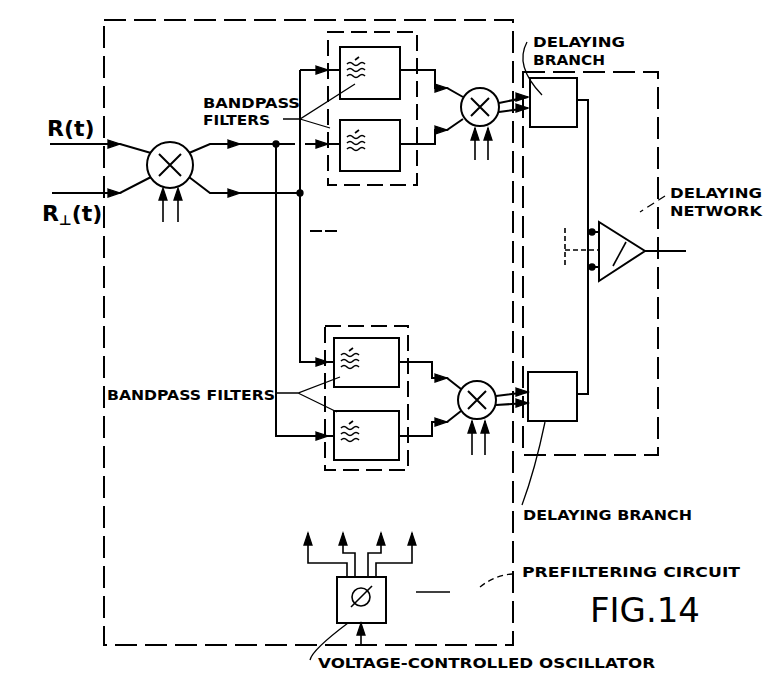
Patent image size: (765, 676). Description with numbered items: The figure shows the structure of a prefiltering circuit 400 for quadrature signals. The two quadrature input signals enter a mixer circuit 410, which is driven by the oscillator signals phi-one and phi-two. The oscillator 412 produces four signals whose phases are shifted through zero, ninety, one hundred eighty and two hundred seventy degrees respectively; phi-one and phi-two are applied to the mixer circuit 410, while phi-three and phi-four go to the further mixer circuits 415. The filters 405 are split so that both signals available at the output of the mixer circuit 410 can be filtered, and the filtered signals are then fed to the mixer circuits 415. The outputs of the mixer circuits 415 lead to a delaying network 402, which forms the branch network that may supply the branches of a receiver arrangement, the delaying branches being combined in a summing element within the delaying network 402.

The prefiltering circuit 400 is at (112, 611).
The delaying network 402 is at (568, 457).
The filters 405 is at (383, 184).
The mixer circuit 410 is at (173, 142).
The oscillator 412 is at (337, 608).
The mixer circuits 415 is at (478, 88).